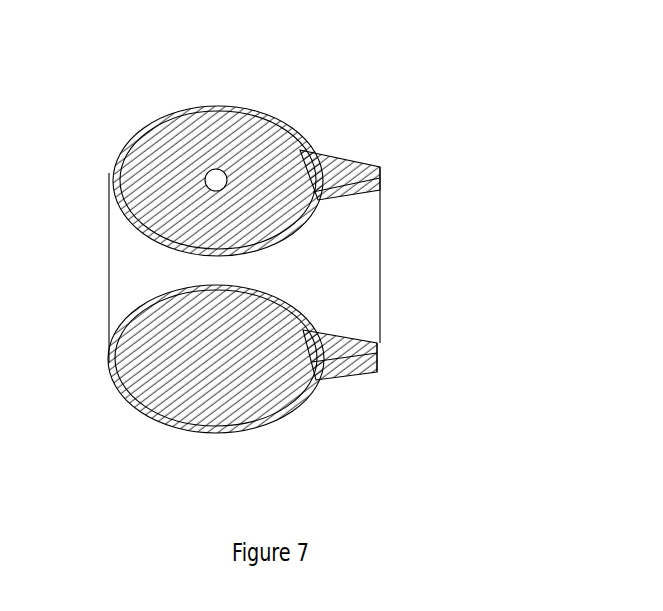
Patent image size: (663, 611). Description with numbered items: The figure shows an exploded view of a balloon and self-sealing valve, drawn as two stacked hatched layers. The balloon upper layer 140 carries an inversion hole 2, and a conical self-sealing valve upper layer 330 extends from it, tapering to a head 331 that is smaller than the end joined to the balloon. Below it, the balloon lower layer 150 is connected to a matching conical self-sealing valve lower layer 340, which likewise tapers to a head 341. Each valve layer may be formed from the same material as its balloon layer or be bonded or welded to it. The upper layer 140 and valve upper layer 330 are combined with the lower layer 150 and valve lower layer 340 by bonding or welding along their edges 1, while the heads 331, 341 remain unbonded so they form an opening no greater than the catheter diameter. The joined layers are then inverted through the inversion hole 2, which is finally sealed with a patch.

The edges 1 is at (247, 110).
The inversion hole 2 is at (207, 177).
The balloon upper layer 140 is at (282, 141).
The balloon lower layer 150 is at (276, 379).
The self-sealing valve upper layer 330 is at (345, 158).
The head 331 is at (392, 177).
The self-sealing valve lower layer 340 is at (345, 378).
The head 341 is at (385, 367).